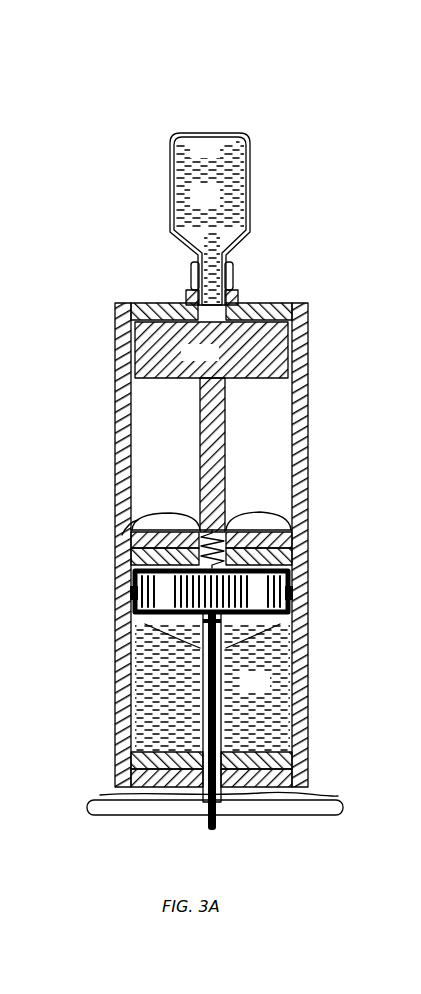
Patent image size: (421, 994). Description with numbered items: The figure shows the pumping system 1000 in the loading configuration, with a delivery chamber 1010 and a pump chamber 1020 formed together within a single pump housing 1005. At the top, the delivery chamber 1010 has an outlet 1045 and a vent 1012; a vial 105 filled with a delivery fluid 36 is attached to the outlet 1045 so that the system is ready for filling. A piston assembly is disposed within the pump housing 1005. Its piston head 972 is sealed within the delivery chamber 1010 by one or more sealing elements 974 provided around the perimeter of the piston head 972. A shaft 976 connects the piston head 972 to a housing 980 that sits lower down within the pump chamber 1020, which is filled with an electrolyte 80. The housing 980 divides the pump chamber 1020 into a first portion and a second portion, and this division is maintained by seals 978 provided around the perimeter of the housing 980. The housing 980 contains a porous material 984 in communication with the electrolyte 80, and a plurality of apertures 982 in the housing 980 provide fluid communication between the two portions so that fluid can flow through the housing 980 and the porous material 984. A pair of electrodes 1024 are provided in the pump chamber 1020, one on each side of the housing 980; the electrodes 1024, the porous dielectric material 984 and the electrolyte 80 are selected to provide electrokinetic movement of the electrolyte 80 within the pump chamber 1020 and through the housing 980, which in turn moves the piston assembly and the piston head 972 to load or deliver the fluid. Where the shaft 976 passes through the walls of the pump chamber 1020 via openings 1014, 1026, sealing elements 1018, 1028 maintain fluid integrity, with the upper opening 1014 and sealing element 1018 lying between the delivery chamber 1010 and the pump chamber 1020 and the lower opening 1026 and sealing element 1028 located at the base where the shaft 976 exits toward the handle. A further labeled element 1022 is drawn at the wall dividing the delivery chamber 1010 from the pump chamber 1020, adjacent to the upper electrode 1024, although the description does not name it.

The pumping system 1000 is at (320, 266).
The vial 105 is at (252, 178).
The delivery fluid 36 is at (210, 184).
The outlet 1045 is at (238, 293).
The pump housing 1005 is at (115, 425).
The sealing element 974 is at (296, 362).
The piston head 972 is at (211, 350).
The shaft 976 is at (227, 418).
The delivery chamber 1010 is at (150, 497).
The opening 1014 is at (260, 502).
The sealing element 1018 is at (150, 528).
The vent 1012 is at (265, 528).
The upper partition 1022 is at (300, 545).
The electrode 1024 is at (300, 567).
The sealing element 978 is at (292, 592).
The porous material 984 is at (131, 594).
The housing 980 is at (137, 629).
The aperture 982 is at (296, 650).
The electrolyte 80 is at (212, 688).
The pump chamber 1020 is at (115, 690).
The opening 1026 is at (130, 793).
The sealing element 1028 is at (310, 797).